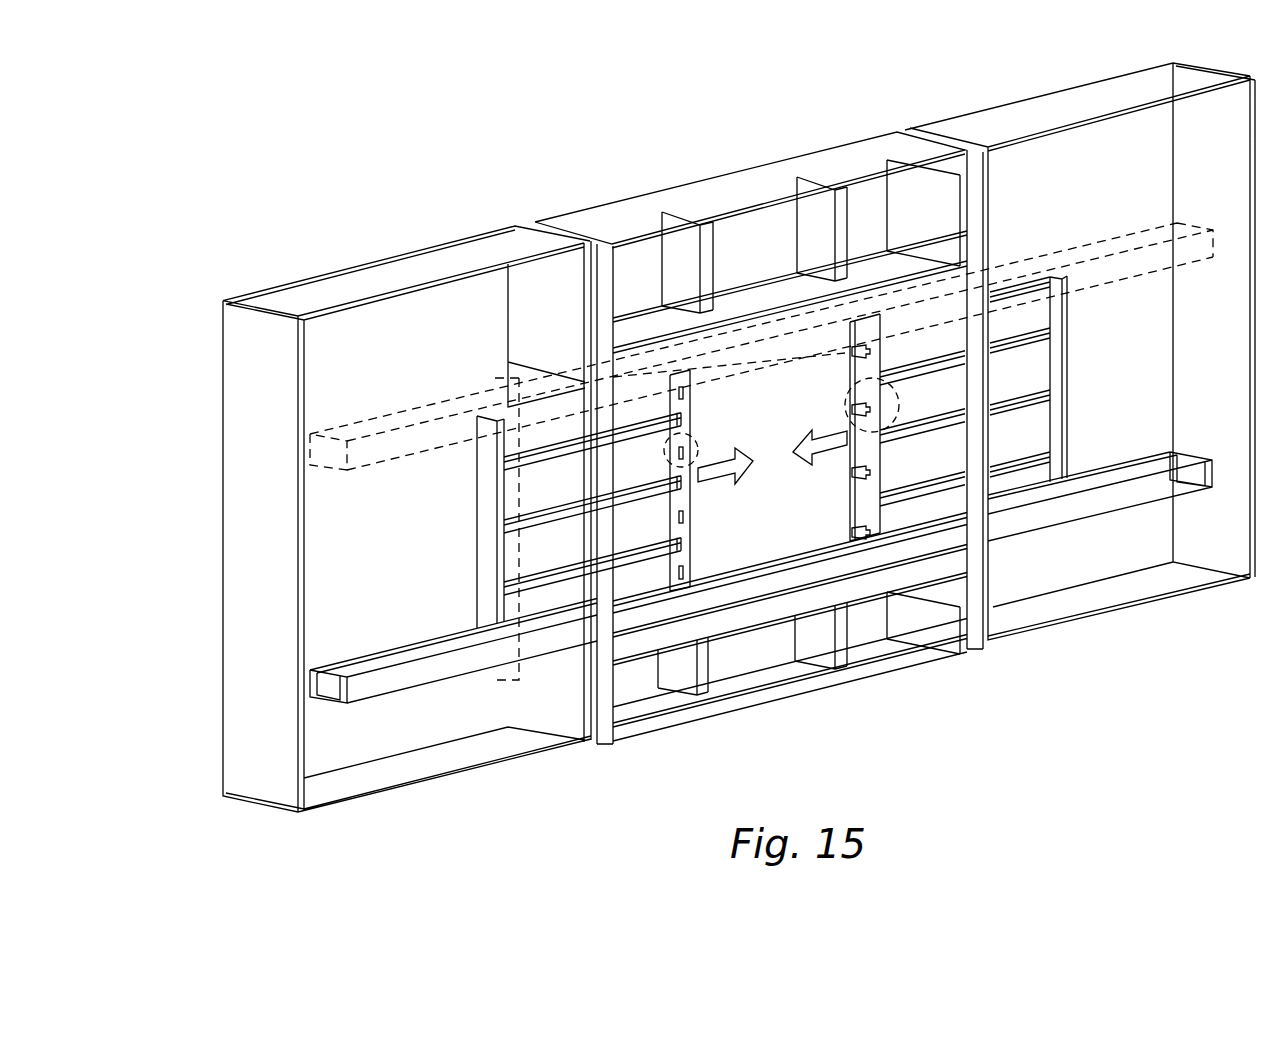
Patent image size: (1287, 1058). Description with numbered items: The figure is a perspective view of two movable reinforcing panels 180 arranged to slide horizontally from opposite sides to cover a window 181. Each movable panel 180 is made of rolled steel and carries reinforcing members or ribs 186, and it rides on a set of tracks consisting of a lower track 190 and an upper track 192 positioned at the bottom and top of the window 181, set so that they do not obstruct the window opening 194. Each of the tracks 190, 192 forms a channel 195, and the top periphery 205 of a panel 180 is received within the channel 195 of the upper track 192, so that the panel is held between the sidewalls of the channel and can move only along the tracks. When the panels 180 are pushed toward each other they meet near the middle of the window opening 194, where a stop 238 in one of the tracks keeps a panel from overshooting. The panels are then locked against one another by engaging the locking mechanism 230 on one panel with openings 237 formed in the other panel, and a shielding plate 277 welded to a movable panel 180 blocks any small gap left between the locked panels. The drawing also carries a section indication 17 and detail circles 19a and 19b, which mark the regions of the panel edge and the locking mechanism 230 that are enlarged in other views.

The section line 17 is at (483, 521).
The detail area 19A 19a is at (698, 436).
The detail area 19B 19b is at (899, 383).
The movable reinforcing panel 180 is at (476, 482).
The window 181 is at (820, 362).
The reinforcing member or rib 186 is at (540, 572).
The lower track 190 is at (400, 642).
The upper track 192 is at (381, 422).
The window opening 194 is at (812, 504).
The channel 195 is at (312, 455).
The top periphery 205 is at (500, 411).
The locking mechanism 230 is at (860, 480).
The openings 237 is at (686, 520).
The stop 238 is at (770, 561).
The shielding plate 277 is at (847, 383).